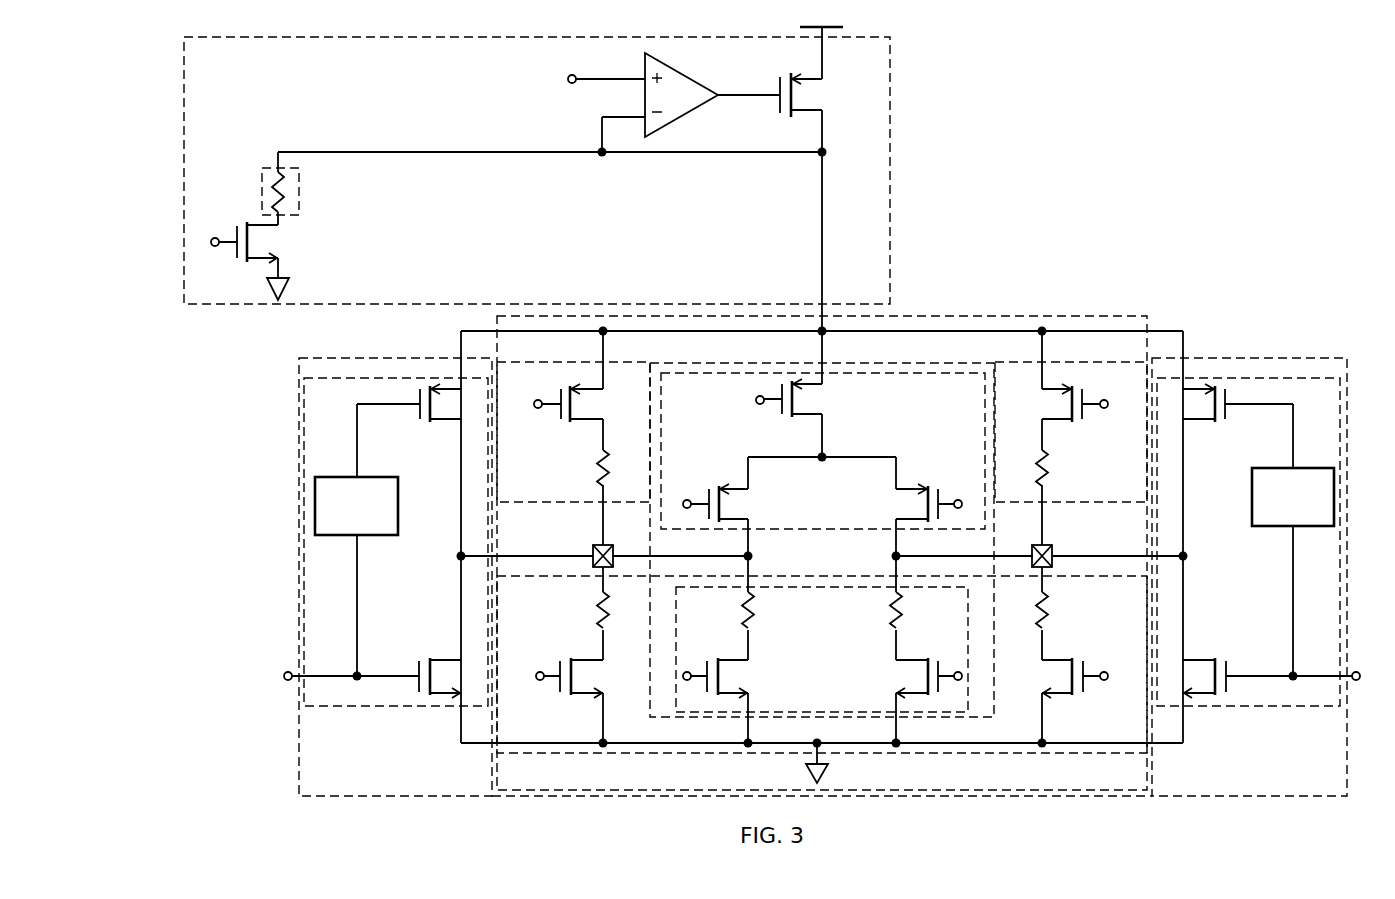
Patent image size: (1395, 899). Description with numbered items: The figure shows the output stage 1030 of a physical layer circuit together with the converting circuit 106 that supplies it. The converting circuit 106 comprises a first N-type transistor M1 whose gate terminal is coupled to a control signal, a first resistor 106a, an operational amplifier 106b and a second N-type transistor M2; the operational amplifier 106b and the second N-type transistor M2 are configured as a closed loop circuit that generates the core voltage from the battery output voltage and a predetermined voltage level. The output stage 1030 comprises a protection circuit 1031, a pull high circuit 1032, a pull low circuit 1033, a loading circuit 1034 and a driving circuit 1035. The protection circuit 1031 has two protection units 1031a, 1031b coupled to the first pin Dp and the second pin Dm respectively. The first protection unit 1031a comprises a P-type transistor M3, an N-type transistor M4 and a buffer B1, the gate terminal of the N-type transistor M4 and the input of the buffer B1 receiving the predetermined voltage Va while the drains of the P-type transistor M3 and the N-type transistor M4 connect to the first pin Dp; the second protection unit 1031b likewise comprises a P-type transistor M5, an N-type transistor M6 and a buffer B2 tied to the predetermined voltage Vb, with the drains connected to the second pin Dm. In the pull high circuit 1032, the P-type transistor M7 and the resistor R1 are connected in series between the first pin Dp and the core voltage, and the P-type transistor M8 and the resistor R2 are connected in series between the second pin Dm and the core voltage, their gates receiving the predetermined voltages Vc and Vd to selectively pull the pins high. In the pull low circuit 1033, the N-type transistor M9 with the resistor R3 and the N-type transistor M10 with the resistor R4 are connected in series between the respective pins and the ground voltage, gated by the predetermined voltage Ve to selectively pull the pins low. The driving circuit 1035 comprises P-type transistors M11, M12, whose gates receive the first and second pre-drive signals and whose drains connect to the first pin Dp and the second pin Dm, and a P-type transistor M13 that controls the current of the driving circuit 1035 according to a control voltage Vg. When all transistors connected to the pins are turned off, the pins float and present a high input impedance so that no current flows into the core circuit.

The converting circuit 106 is at (570, 192).
The first resistor 106a is at (300, 185).
The operational amplifier 106b is at (684, 70).
The output stage 1030 is at (824, 530).
The protection circuit 1031 is at (824, 544).
The first protection unit 1031a is at (373, 554).
The second protection unit 1031b is at (1272, 554).
The pull high circuit 1032 is at (822, 547).
The pull low circuit 1033 is at (822, 707).
The loading circuit 1034 is at (947, 713).
The driving circuit 1035 is at (822, 491).
The first N-type transistor M1 is at (253, 236).
The second N-type transistor M2 is at (788, 95).
The P-type transistor M3 is at (420, 403).
The N-type transistor M4 is at (367, 678).
The P-type transistor M5 is at (1227, 403).
The N-type transistor M6 is at (1279, 678).
The P-type transistor M7 is at (572, 403).
The P-type transistor M8 is at (1073, 403).
The N-type transistor M9 is at (573, 678).
The N-type transistor M10 is at (1068, 678).
The P-type transistor M11 is at (731, 496).
The P-type transistor M12 is at (912, 496).
The P-type transistor M13 is at (797, 398).
The resistor R1 is at (621, 468).
The resistor R2 is at (1022, 468).
The resistor R3 is at (621, 610).
The resistor R4 is at (1023, 610).
The buffer B1 is at (400, 511).
The buffer B2 is at (1252, 507).